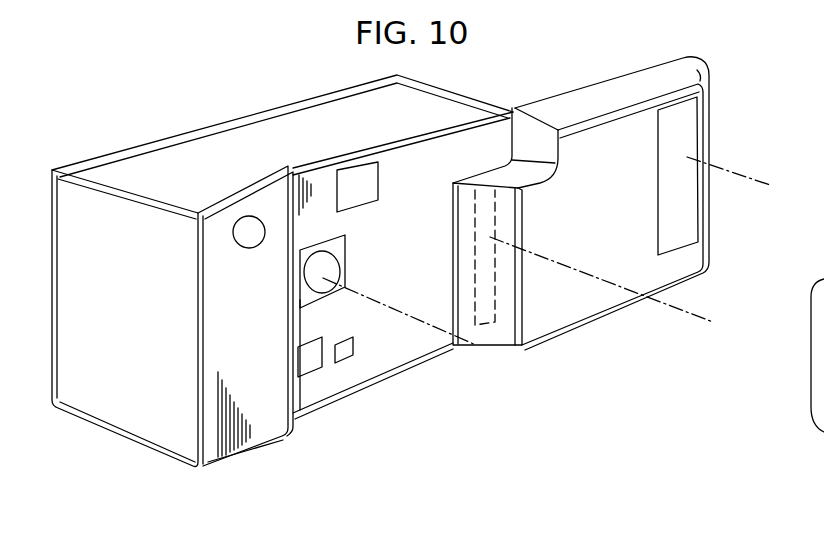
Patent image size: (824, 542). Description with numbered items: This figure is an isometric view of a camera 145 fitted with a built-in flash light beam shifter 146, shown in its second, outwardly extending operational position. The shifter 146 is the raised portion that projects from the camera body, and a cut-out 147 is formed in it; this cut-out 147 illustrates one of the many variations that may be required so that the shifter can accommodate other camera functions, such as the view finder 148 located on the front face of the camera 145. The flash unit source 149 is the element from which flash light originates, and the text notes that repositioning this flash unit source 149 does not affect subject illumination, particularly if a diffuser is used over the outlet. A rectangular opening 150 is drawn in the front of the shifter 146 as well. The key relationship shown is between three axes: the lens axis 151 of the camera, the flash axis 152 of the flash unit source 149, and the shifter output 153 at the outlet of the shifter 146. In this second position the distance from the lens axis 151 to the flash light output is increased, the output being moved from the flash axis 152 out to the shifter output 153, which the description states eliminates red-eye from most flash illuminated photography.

The camera 145 is at (238, 116).
The flash light beam shifter 146 is at (610, 313).
The cut-out 147 is at (562, 155).
The view finder 148 is at (378, 178).
The flash unit source 149 is at (495, 293).
The opening 150 is at (663, 197).
The lens axis 151 is at (488, 350).
The flash axis 152 is at (688, 308).
The shifter output 153 is at (770, 185).